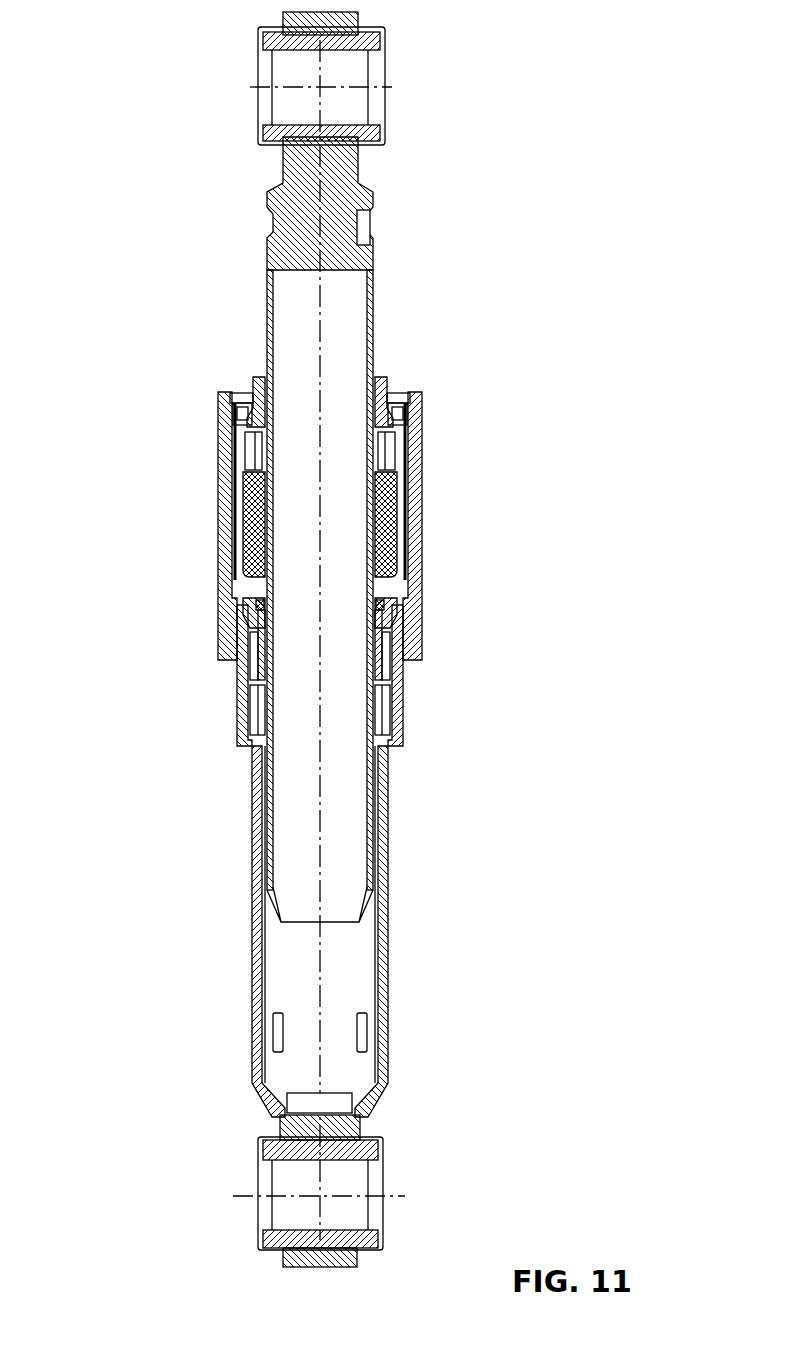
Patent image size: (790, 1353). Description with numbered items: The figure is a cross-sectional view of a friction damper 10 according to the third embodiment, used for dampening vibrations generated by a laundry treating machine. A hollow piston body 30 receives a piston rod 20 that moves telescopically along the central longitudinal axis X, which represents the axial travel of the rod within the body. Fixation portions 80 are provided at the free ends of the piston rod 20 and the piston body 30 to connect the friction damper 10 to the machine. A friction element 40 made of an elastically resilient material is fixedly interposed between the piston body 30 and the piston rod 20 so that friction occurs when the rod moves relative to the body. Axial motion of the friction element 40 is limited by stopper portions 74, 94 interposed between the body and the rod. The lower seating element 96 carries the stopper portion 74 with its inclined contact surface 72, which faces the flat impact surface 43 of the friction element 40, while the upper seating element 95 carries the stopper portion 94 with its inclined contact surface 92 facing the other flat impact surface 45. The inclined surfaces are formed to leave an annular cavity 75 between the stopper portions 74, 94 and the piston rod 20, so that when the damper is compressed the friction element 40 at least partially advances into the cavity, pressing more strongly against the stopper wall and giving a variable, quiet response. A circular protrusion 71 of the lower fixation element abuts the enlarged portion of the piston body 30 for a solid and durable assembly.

The friction damper 10 is at (530, 299).
The piston rod 20 is at (297, 300).
The piston body 30 is at (262, 915).
The friction element 40 is at (253, 503).
The flat impact surface 43 is at (393, 573).
The flat impact surface 45 is at (390, 468).
The circular protrusion 71 is at (243, 647).
The inclined contact surface 72 is at (247, 608).
The stopper portion 74 is at (250, 617).
The annular cavity 75 is at (393, 610).
The fixation portion 80 is at (285, 1175).
The inclined contact surface 92 is at (262, 436).
The stopper portion 94 is at (400, 427).
The upper seating element 95 is at (228, 424).
The lower seating element 96 is at (243, 622).
The central longitudinal axis X is at (322, 947).